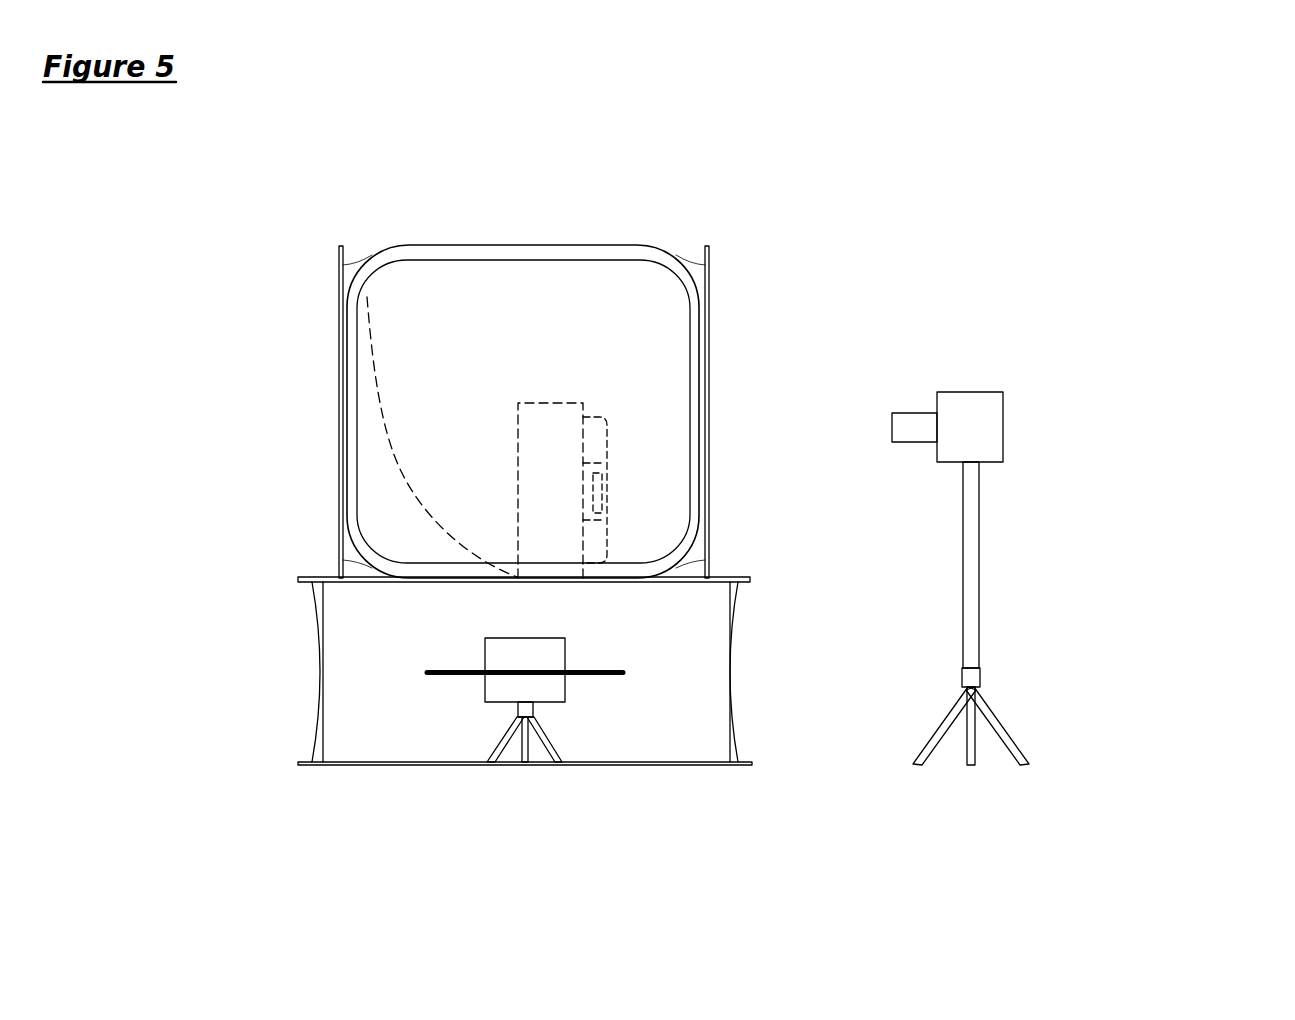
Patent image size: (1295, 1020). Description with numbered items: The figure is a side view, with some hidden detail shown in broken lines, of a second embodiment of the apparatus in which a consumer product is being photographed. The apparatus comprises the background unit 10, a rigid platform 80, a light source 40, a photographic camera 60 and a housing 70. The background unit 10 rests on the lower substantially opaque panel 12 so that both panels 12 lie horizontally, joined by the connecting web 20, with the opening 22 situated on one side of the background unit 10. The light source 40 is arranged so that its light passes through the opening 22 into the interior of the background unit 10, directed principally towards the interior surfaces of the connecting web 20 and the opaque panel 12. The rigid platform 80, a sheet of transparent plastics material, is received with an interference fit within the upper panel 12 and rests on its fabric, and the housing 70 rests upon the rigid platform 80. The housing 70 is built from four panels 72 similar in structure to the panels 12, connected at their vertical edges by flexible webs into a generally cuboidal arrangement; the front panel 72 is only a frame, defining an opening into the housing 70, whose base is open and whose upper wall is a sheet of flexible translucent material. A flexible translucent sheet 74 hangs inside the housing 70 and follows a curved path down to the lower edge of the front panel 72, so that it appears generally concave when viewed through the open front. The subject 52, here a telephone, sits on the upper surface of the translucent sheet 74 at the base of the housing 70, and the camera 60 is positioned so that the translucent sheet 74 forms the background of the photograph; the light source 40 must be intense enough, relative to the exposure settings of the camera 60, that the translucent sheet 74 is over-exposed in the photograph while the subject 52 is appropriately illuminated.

The background unit 10 is at (276, 661).
The opaque panel 12 is at (752, 582).
The connecting web 20 is at (347, 731).
The opening 22 is at (447, 675).
The light source 40 is at (520, 663).
The subject 52 is at (533, 415).
The photographic camera 60 is at (990, 428).
The housing 70 is at (300, 264).
The panel 72 is at (338, 397).
The translucent sheet 74 is at (397, 478).
The rigid platform 80 is at (720, 578).